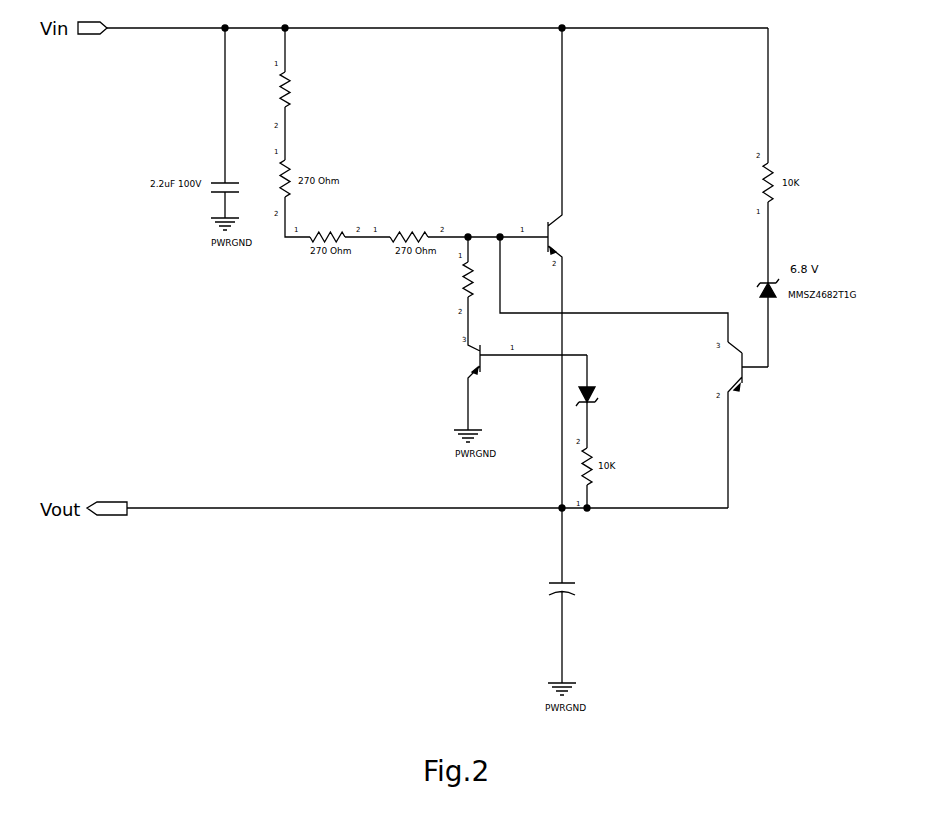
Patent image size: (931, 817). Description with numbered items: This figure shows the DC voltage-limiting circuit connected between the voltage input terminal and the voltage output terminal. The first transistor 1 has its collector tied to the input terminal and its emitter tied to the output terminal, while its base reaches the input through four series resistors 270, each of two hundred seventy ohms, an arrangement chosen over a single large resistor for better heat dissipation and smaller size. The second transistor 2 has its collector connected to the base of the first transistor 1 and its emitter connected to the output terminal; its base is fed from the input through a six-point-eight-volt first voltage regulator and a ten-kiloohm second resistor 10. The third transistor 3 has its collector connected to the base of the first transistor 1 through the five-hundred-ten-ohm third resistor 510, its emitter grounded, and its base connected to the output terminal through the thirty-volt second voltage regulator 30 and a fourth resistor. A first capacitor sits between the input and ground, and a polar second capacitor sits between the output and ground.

The first transistor 1 is at (772, 425).
The second transistor 2 is at (479, 363).
The third transistor 3 is at (593, 305).
The second resistor 10 is at (589, 627).
The resistor 270 is at (310, 89).
The third resistor 510 is at (441, 279).
The second voltage regulator 30 is at (617, 388).